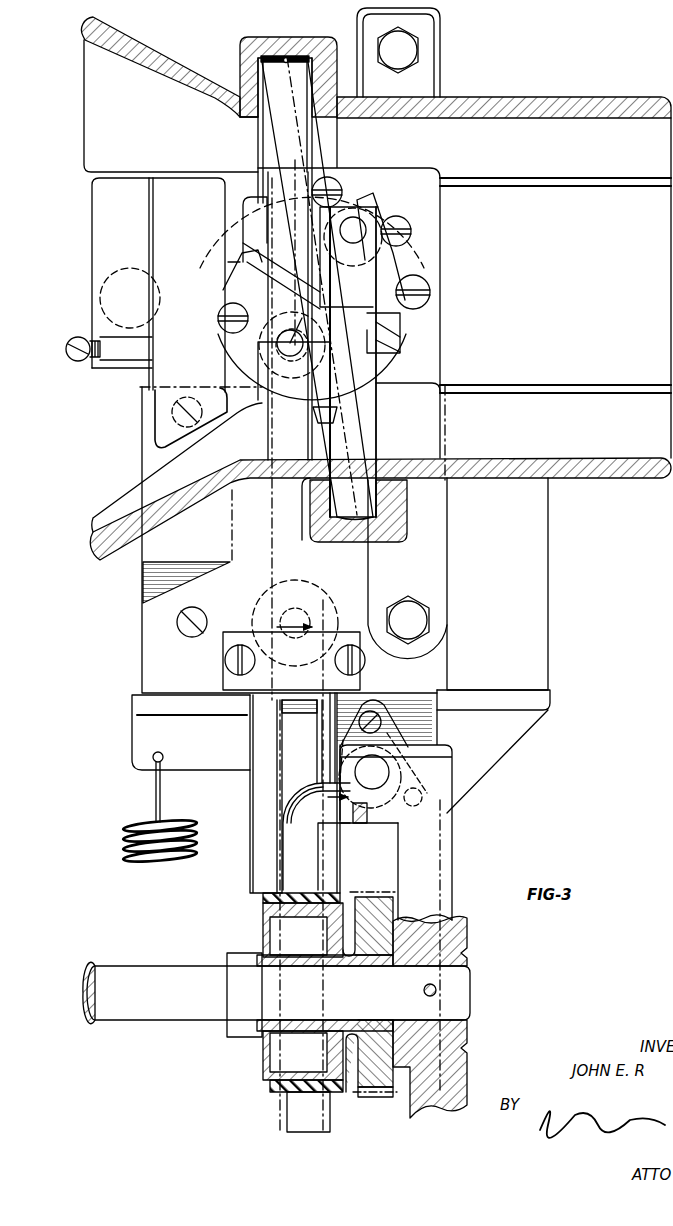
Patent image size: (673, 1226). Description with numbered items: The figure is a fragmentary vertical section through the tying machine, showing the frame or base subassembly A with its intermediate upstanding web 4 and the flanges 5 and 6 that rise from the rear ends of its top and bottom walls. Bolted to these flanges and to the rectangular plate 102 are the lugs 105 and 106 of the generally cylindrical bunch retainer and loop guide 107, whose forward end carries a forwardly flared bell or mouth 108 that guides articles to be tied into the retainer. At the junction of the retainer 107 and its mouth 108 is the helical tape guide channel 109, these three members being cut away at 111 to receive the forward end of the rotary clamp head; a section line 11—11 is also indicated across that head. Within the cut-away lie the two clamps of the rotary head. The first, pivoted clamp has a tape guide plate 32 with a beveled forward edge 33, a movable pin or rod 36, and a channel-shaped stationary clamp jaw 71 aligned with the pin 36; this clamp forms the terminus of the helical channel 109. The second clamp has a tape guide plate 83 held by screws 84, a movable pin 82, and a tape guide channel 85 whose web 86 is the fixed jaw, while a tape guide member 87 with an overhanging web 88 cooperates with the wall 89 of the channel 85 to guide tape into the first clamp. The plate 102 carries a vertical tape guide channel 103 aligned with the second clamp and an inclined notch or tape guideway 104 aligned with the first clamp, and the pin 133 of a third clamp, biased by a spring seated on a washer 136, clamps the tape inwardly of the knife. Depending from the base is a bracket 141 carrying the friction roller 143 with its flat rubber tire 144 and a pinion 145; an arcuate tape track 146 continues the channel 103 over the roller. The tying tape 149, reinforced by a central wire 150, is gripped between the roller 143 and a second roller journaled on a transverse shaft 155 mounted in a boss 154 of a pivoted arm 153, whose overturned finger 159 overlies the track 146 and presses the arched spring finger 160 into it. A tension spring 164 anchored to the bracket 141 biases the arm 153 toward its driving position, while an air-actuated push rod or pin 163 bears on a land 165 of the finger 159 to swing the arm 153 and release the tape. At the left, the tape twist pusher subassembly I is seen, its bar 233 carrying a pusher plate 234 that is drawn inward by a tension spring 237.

The intermediate upstanding web 4 is at (287, 57).
The flange 5 is at (440, 18).
The flange 6 is at (445, 661).
The section line 11- 11 is at (297, 200).
The tape guide plate 32 is at (262, 205).
The beveled forward edge 33 is at (250, 241).
The pin or rod 36 is at (398, 218).
The stationary clamp jaw 71 is at (382, 205).
The piston rod or pin 82 is at (272, 314).
The tape guide plate 83 is at (228, 262).
The screws 84 is at (225, 306).
The tape guide channel 85 is at (298, 395).
The web 86 is at (287, 378).
The tape guide member 87 is at (418, 297).
The overhanging web 88 is at (422, 322).
The wall 89 is at (306, 310).
The rectangular plate 102 is at (240, 594).
The vertical tape guide channel 103 is at (280, 540).
The inclined notch or tape guideway 104 is at (378, 436).
The lug 105 is at (437, 70).
The lug 106 is at (443, 574).
The bunch retainer and loop guide 107 is at (615, 97).
The forwardly flared bell or mouth 108 is at (85, 62).
The helical tape guide channel 109 is at (252, 60).
The cut-away 111 is at (410, 157).
The pin 133 is at (290, 605).
The washer 136 is at (330, 592).
The bracket 141 is at (135, 726).
The friction roller 143 is at (268, 1058).
The flat rubber tire 144 is at (270, 1093).
The pinion 145 is at (375, 1099).
The arcuate tape track 146 is at (262, 812).
The tying tape 149 is at (302, 148).
The wire 150 is at (285, 56).
The arm 153 is at (462, 1072).
The boss 154 is at (462, 946).
The transverse shaft 155 is at (193, 965).
The overturned finger 159 is at (305, 857).
The spring finger 160 is at (288, 773).
The push rod or pin 163 is at (418, 815).
The tension spring 164 is at (123, 830).
The land 165 is at (440, 768).
The bar 233 is at (100, 300).
The pusher plate 234 is at (158, 285).
The tension spring 237 is at (73, 362).
The frame or base subassembly A is at (557, 584).
The tape twist pusher subassembly I is at (84, 262).